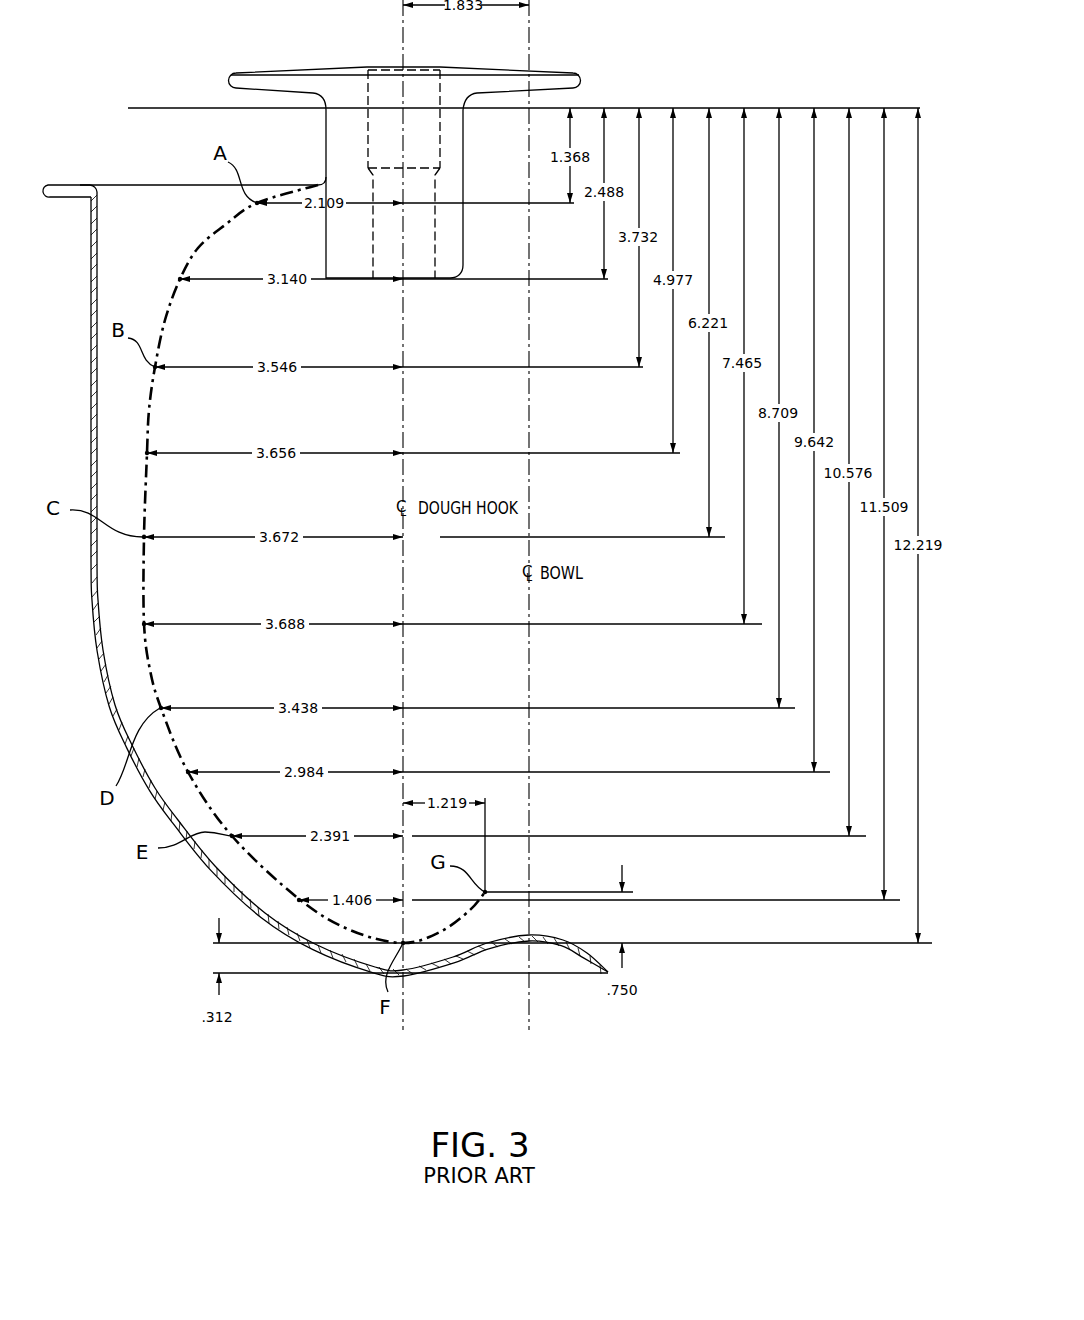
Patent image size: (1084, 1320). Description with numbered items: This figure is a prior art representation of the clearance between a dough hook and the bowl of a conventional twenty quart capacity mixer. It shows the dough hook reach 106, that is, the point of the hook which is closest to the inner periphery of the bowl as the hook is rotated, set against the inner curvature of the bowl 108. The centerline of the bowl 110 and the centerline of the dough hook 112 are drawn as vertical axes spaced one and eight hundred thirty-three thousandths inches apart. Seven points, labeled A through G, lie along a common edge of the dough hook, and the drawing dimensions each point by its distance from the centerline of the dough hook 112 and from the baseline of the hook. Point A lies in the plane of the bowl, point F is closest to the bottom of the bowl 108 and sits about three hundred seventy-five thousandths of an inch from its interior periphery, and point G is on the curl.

The dough hook reach 106 is at (198, 248).
The bowl 108 is at (102, 668).
The centerline of the bowl 110 is at (529, 1027).
The centerline of the dough hook 112 is at (402, 1027).